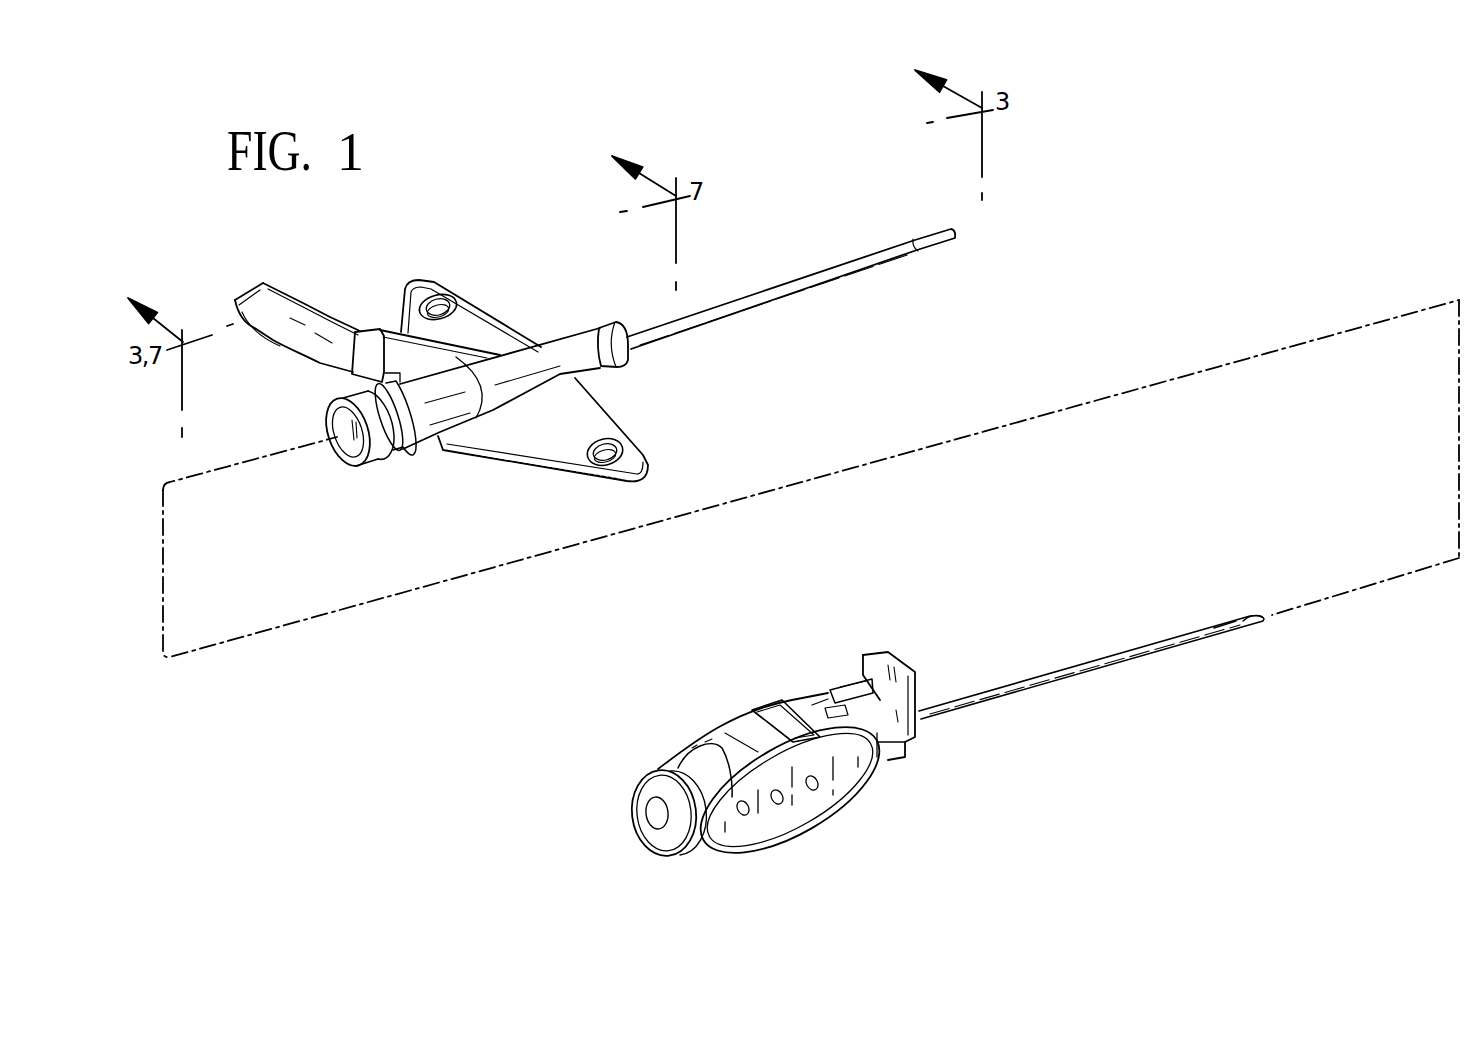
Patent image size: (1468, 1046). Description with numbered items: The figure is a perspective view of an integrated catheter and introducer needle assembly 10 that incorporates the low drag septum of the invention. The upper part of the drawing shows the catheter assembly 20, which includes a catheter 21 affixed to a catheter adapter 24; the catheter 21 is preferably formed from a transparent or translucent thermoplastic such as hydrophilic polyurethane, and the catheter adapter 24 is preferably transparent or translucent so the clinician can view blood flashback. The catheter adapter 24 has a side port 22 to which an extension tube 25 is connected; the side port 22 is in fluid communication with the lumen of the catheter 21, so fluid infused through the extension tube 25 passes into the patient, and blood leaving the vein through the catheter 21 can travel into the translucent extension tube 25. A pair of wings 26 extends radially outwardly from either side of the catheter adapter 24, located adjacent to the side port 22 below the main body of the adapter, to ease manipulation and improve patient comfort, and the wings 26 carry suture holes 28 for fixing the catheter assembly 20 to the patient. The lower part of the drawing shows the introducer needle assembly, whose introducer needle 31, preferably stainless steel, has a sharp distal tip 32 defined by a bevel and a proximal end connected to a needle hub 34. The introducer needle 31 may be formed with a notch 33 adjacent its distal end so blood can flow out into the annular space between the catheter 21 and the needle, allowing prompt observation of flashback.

The integrated catheter and introducer needle assembly 10 is at (421, 815).
The catheter assembly 20 is at (771, 367).
The catheter 21 is at (866, 258).
The side port 22 is at (376, 331).
The catheter adapter 24 is at (418, 432).
The extension tube 25 is at (258, 305).
The wings 26 is at (487, 328).
The suture holes 28 is at (440, 307).
The introducer needle 31 is at (1118, 665).
The sharp distal tip 32 is at (1263, 617).
The notch 33 is at (1226, 626).
The needle hub 34 is at (793, 798).